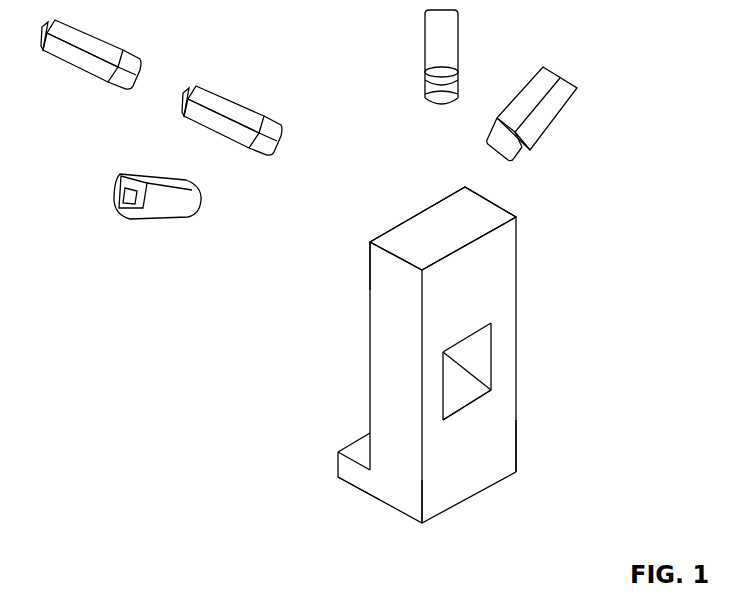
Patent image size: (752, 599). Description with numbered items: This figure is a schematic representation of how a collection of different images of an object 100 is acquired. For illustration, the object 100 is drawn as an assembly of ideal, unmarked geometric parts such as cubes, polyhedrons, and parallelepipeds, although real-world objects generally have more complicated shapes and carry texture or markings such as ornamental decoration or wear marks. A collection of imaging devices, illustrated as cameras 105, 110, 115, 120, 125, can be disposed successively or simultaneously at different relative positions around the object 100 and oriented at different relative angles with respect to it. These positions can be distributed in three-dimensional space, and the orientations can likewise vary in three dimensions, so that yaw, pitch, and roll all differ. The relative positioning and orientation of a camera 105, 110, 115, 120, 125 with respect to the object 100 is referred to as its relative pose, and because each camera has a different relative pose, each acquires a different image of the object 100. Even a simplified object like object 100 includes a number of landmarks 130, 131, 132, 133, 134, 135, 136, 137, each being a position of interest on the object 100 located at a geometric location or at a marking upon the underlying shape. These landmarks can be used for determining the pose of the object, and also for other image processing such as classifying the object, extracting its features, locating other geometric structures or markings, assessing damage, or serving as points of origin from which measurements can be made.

The object 100 is at (393, 362).
The camera 105 is at (88, 43).
The camera 110 is at (232, 109).
The camera 115 is at (125, 193).
The camera 120 is at (425, 51).
The camera 125 is at (547, 117).
The landmark 130 is at (516, 217).
The landmark 131 is at (443, 350).
The landmark 132 is at (370, 242).
The landmark 133 is at (338, 452).
The landmark 134 is at (338, 477).
The landmark 135 is at (491, 390).
The landmark 136 is at (516, 472).
The bottom front corner 137 is at (422, 523).